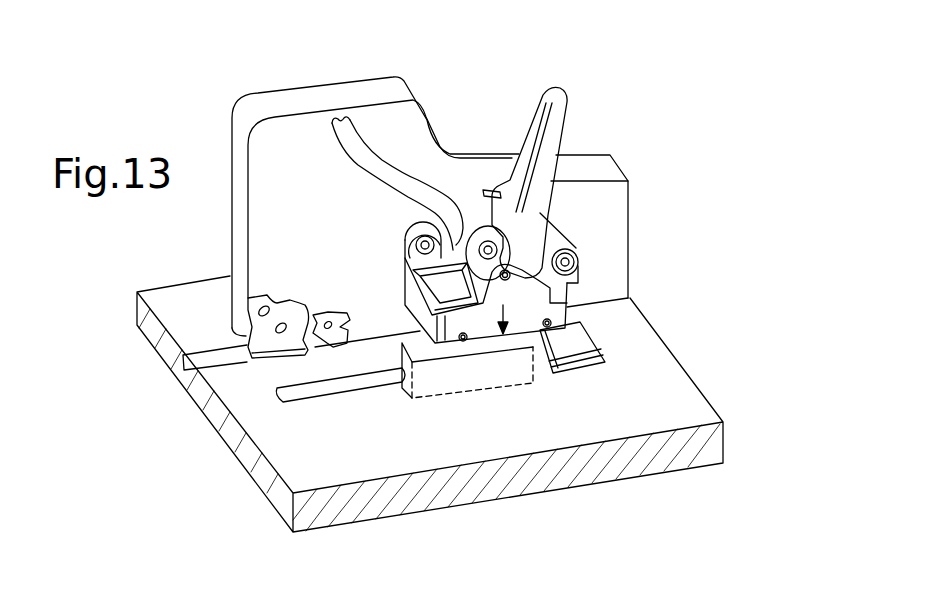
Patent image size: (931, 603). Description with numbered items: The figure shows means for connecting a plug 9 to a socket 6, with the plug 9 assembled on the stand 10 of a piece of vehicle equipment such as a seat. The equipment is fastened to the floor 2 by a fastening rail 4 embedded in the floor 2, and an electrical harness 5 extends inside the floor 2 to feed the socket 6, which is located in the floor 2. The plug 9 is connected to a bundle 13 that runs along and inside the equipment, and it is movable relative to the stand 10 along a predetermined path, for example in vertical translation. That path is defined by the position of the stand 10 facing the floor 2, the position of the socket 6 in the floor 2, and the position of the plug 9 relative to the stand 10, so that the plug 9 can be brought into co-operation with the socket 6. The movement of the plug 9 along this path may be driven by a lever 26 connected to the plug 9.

The floor 2 is at (675, 393).
The fastening rail 4 is at (212, 355).
The electrical harness 5 is at (330, 385).
The socket 6 is at (445, 378).
The plug 9 is at (528, 293).
The stand 10 is at (610, 227).
The bundle 13 is at (379, 160).
The lever 26 is at (557, 128).